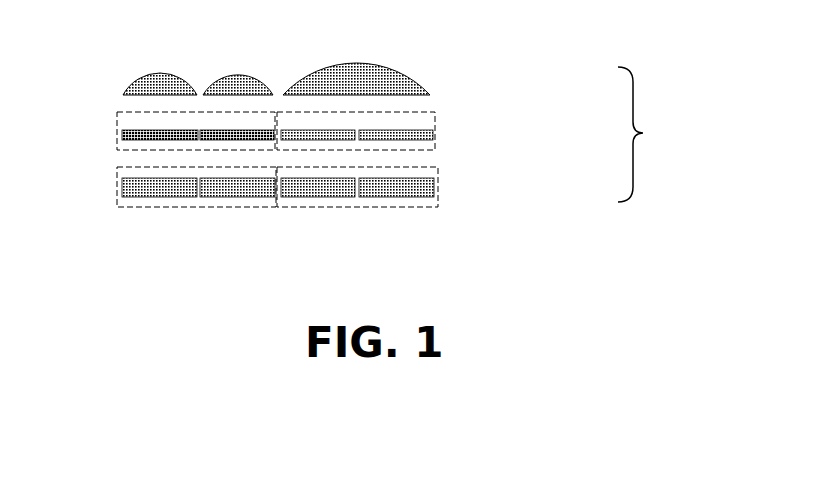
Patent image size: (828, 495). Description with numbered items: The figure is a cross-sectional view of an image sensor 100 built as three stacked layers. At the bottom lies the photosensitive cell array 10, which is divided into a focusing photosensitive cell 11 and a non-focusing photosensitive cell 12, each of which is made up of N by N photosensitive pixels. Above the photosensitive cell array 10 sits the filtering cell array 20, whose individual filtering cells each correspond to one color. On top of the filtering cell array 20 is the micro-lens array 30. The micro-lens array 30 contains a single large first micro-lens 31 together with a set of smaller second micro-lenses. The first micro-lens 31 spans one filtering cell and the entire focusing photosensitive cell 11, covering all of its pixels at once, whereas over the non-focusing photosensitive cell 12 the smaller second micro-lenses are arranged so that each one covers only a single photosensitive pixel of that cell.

The image sensor 100 is at (657, 134).
The photosensitive cell array 10 is at (319, 212).
The focusing photosensitive cell 11 is at (438, 187).
The non-focusing photosensitive cell 12 is at (118, 187).
The filtering cell array 20 is at (320, 128).
The micro-lens array 30 is at (339, 63).
The first micro-lens 31 is at (377, 70).